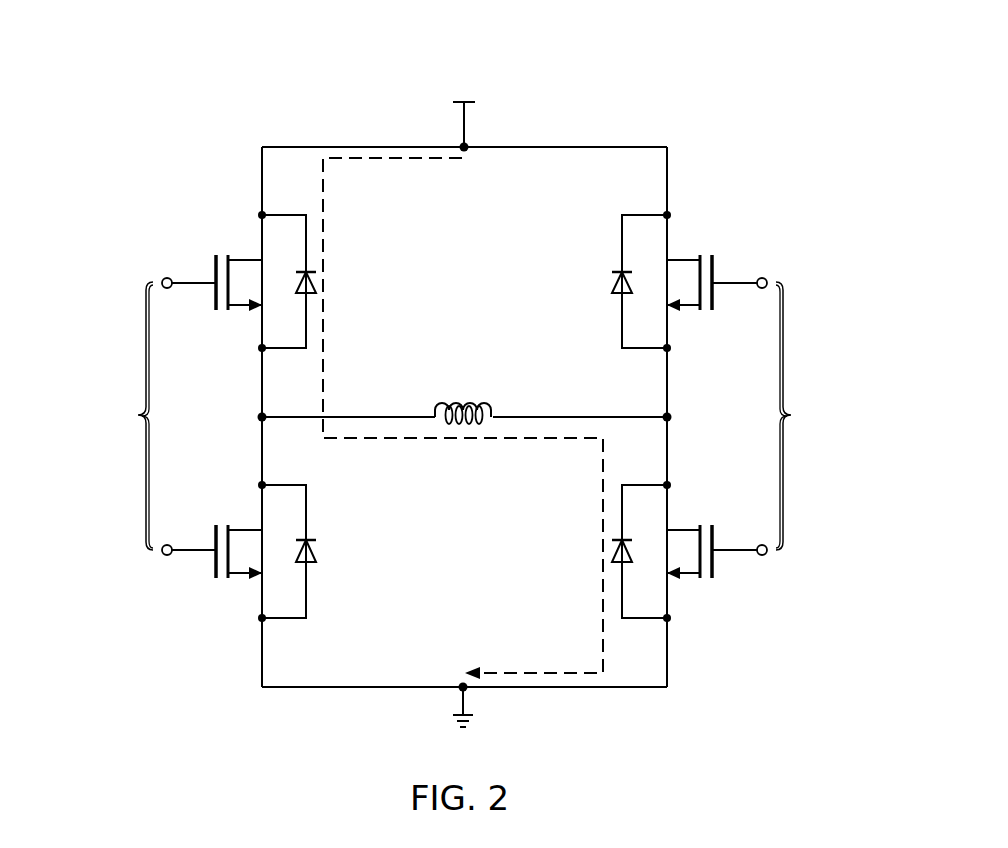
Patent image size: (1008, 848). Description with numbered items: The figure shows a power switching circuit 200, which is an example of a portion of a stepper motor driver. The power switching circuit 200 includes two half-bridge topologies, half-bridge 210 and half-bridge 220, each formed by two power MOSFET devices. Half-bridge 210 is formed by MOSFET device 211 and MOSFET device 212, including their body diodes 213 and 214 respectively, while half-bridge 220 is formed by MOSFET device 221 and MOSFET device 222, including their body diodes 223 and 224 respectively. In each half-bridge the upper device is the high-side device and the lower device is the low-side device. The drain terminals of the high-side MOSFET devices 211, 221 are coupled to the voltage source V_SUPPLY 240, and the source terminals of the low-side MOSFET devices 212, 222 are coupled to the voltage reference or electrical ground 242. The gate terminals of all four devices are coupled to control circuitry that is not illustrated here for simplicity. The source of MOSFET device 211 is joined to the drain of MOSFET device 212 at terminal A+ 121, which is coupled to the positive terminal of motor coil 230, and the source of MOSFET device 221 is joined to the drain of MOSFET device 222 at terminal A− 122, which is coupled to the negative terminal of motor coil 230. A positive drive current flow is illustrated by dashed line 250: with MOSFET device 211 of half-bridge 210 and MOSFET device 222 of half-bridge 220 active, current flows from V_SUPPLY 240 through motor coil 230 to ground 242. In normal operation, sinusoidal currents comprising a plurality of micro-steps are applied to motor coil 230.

The power switching circuit 200 is at (690, 78).
The half-bridge 210 is at (195, 203).
The half-bridge 220 is at (735, 203).
The MOSFET device 211 is at (213, 278).
The MOSFET device 212 is at (213, 568).
The MOSFET device 221 is at (716, 279).
The MOSFET device 222 is at (716, 568).
The body diode 213 is at (318, 278).
The body diode 214 is at (316, 551).
The body diode 223 is at (613, 279).
The body diode 224 is at (612, 546).
The motor coil 230 is at (460, 405).
The V_SUPPLY 240 is at (457, 101).
The voltage reference (electrical ground) 242 is at (476, 718).
The dashed line 250 is at (325, 220).
The terminal A+ 121 is at (268, 421).
The terminal A− 122 is at (663, 415).